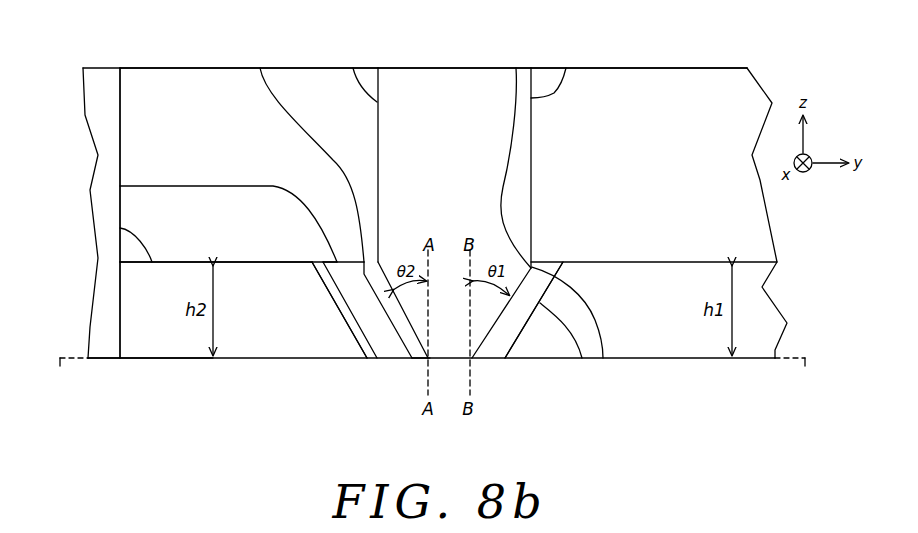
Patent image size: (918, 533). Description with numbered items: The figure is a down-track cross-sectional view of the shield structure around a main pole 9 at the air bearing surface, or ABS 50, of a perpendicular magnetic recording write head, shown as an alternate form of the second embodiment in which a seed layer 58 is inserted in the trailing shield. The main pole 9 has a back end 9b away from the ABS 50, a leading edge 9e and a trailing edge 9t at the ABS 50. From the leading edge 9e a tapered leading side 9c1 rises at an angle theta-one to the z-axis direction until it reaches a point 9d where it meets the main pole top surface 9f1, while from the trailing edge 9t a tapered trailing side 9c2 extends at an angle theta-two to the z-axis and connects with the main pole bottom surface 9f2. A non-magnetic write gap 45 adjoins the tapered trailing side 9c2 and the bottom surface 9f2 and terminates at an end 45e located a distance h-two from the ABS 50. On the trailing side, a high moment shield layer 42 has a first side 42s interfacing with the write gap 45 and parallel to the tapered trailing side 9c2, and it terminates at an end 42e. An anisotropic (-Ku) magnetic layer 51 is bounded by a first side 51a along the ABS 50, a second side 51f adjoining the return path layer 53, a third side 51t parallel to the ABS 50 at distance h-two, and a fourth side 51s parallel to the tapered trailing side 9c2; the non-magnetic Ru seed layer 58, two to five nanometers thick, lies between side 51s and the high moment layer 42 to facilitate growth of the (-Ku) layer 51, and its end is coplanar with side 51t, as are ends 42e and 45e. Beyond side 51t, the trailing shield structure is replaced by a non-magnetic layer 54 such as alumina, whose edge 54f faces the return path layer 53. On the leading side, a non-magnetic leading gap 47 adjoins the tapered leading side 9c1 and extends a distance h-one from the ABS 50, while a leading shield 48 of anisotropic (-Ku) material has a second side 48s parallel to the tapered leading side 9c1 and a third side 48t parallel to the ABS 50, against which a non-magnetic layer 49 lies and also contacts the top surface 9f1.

The main pole 9 is at (412, 83).
The back end of the main pole 9b is at (460, 67).
The tapered leading side 9c1 is at (516, 68).
The tapered trailing side 9c2 is at (378, 333).
The point 9d is at (603, 358).
The leading edge 9e is at (472, 358).
The main pole top surface 9f1 is at (566, 68).
The main pole bottom surface 9f2 is at (353, 68).
The trailing edge 9t is at (430, 358).
The high moment shield layer 42 is at (395, 328).
The end of the first trailing shield layer 42e is at (120, 186).
The first side of the high moment shield layer 42s is at (370, 291).
The write gap 45 is at (417, 350).
The end of the write gap 45e is at (260, 68).
The leading gap 47 is at (500, 347).
The leading shield 48 is at (650, 338).
The second side of the leading shield 48s is at (582, 358).
The third side of the leading shield 48t is at (753, 260).
The non-magnetic layer 49 is at (669, 83).
The ABS 50 is at (432, 375).
The anisotropic (-Ku) magnetic layer 51 is at (188, 343).
The first side of the anisotropic (-Ku) magnetic layer 51a is at (157, 359).
The fourth side of the anisotropic (-Ku) magnetic layer 51s is at (317, 280).
The third side of the anisotropic (-Ku) magnetic layer 51t is at (120, 228).
The second side of the anisotropic (-Ku) magnetic layer 51f is at (118, 285).
The return path layer 53 is at (100, 308).
The non-magnetic layer 54 is at (187, 83).
The shield layer front 54f is at (120, 113).
The seed layer 58 is at (363, 278).